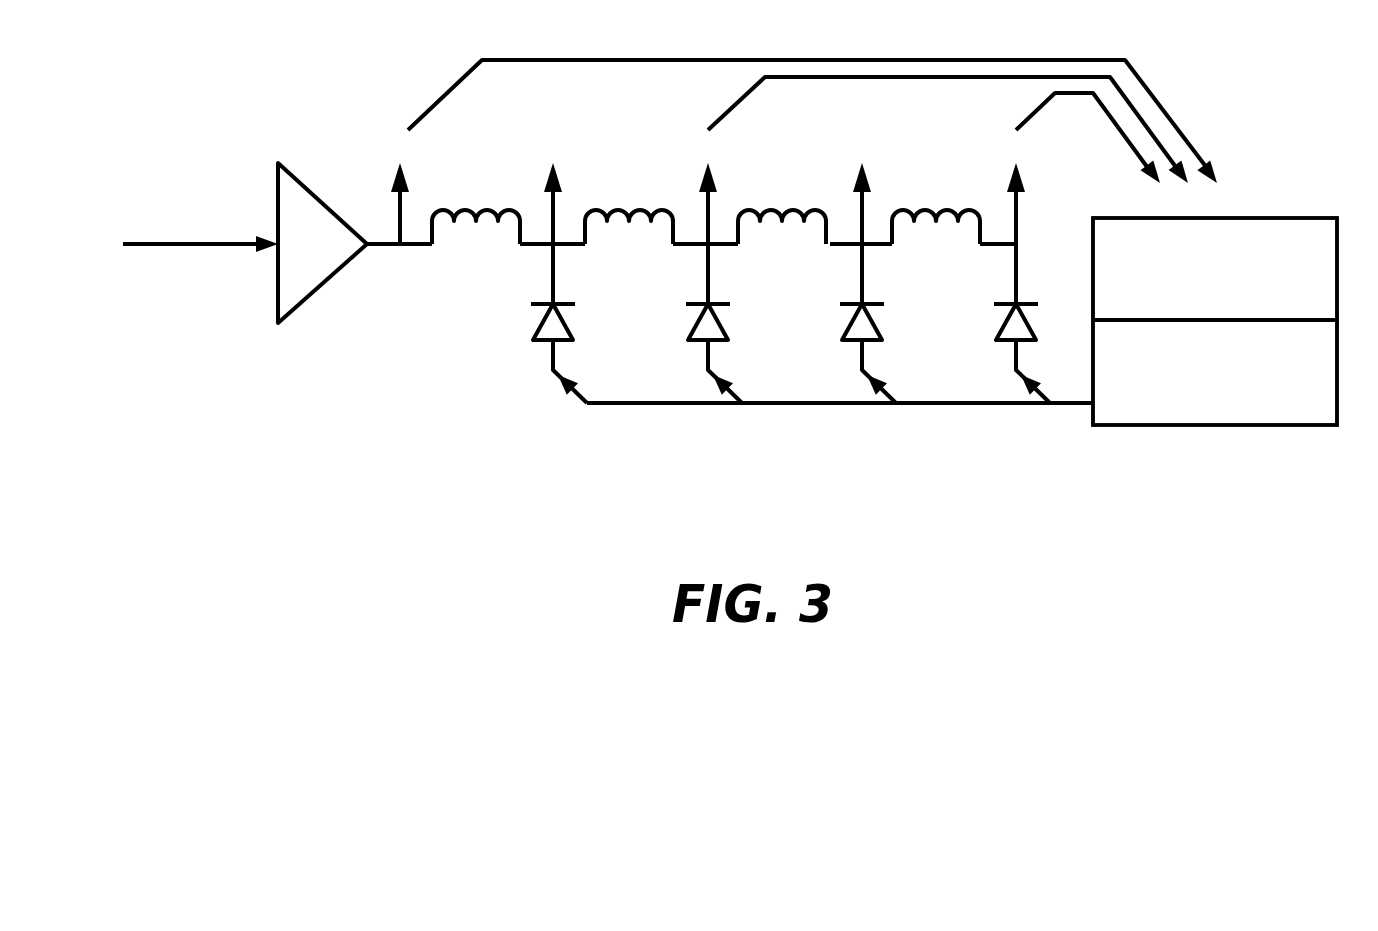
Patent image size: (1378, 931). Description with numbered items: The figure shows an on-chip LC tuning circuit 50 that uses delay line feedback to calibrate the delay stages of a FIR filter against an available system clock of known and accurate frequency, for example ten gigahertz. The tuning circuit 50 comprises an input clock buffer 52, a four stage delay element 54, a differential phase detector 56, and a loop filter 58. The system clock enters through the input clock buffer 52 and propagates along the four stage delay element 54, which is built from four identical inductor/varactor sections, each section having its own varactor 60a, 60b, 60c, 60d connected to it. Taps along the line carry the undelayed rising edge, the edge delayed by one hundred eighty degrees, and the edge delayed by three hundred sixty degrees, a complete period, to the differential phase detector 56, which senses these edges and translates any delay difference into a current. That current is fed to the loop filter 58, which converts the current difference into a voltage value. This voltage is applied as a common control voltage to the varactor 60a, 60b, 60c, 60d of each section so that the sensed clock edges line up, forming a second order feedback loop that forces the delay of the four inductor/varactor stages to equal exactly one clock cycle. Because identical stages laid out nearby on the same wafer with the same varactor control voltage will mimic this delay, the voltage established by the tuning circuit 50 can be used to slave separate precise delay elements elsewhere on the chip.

The on-chip LC tuning circuit 50 is at (737, 505).
The input clock buffer 52 is at (313, 295).
The four stage delay element 54 is at (812, 104).
The differential phase detector 56 is at (1326, 296).
The loop filter 58 is at (1276, 399).
The varactor 60a is at (522, 318).
The varactor 60b is at (677, 318).
The varactor 60c is at (831, 318).
The varactor 60d is at (985, 318).